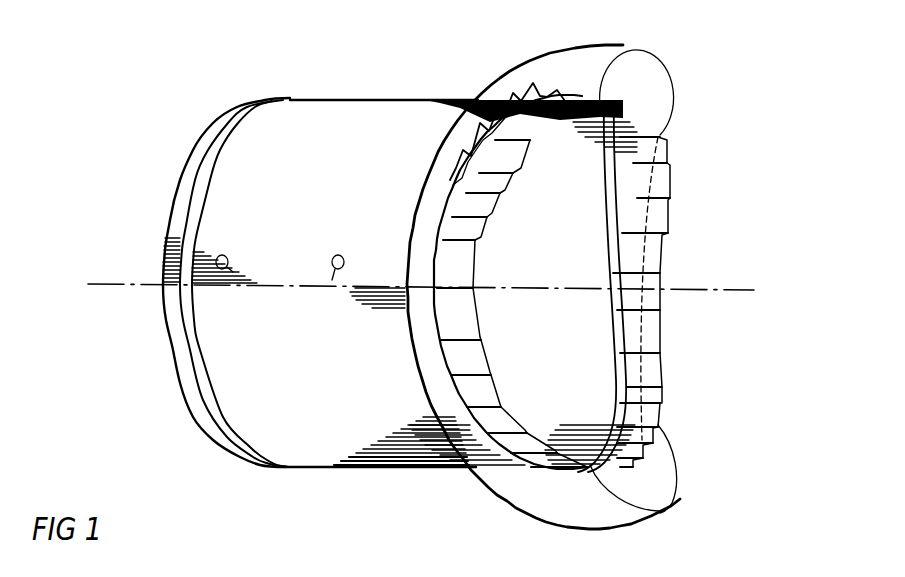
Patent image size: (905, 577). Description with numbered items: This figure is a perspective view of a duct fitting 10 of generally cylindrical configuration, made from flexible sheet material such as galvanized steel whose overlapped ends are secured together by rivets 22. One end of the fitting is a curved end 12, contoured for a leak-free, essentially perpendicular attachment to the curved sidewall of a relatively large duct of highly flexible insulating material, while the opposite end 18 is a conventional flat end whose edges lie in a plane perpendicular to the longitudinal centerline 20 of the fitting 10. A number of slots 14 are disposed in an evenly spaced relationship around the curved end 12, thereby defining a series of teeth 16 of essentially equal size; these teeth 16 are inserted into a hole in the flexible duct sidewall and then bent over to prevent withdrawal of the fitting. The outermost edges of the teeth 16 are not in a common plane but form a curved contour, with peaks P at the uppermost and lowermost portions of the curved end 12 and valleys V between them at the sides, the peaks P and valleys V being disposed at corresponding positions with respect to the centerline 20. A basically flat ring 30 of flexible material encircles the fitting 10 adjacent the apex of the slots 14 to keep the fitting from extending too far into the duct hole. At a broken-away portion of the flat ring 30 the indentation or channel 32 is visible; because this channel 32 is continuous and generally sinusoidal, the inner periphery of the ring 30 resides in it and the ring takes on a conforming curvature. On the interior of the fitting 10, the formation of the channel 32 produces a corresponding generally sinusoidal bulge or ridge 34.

The duct fitting 10 is at (342, 63).
The curved end 12 is at (660, 364).
The slots 14 is at (450, 293).
The teeth 16 is at (510, 151).
The opposite end 18 is at (180, 187).
The longitudinal centerline 20 is at (419, 288).
The rivets 22 is at (334, 276).
The flat ring 30 is at (653, 92).
The indentation or channel 32 is at (493, 115).
The bulge or ridge 34 is at (606, 247).
The peaks P is at (623, 45).
The valleys V is at (455, 292).